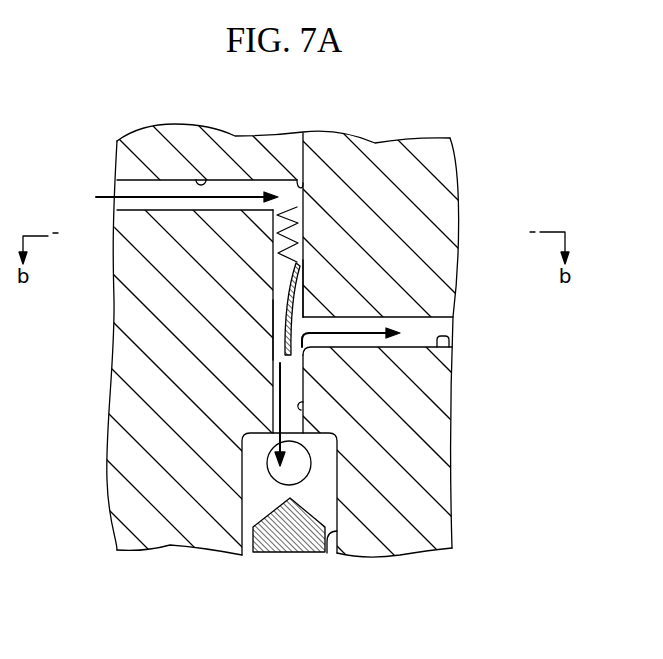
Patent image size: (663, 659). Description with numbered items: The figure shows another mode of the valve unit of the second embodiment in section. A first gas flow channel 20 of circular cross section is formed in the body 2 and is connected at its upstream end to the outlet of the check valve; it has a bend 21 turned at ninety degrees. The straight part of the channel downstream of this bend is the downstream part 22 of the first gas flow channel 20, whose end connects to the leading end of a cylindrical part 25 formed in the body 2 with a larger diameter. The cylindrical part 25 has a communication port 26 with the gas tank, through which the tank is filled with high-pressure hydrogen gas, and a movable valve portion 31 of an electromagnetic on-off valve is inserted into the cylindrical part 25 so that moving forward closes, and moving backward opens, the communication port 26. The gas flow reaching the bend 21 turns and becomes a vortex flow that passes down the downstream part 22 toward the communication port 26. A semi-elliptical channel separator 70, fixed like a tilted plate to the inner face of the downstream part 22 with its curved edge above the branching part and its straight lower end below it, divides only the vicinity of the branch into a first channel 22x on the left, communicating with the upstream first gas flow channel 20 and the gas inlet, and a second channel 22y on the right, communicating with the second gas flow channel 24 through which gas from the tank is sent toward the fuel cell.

The body 2 is at (437, 207).
The first gas flow channel 20 is at (203, 180).
The bend 21 is at (302, 133).
The downstream part of the first gas flow channel 22 is at (303, 405).
The first channel 22x is at (275, 330).
The second channel 22y is at (303, 297).
The second gas flow channel 24 is at (449, 341).
The cylindrical part 25 is at (332, 555).
The communication port 26 is at (282, 478).
The movable valve portion 31 is at (277, 553).
The channel separator 70 is at (282, 302).